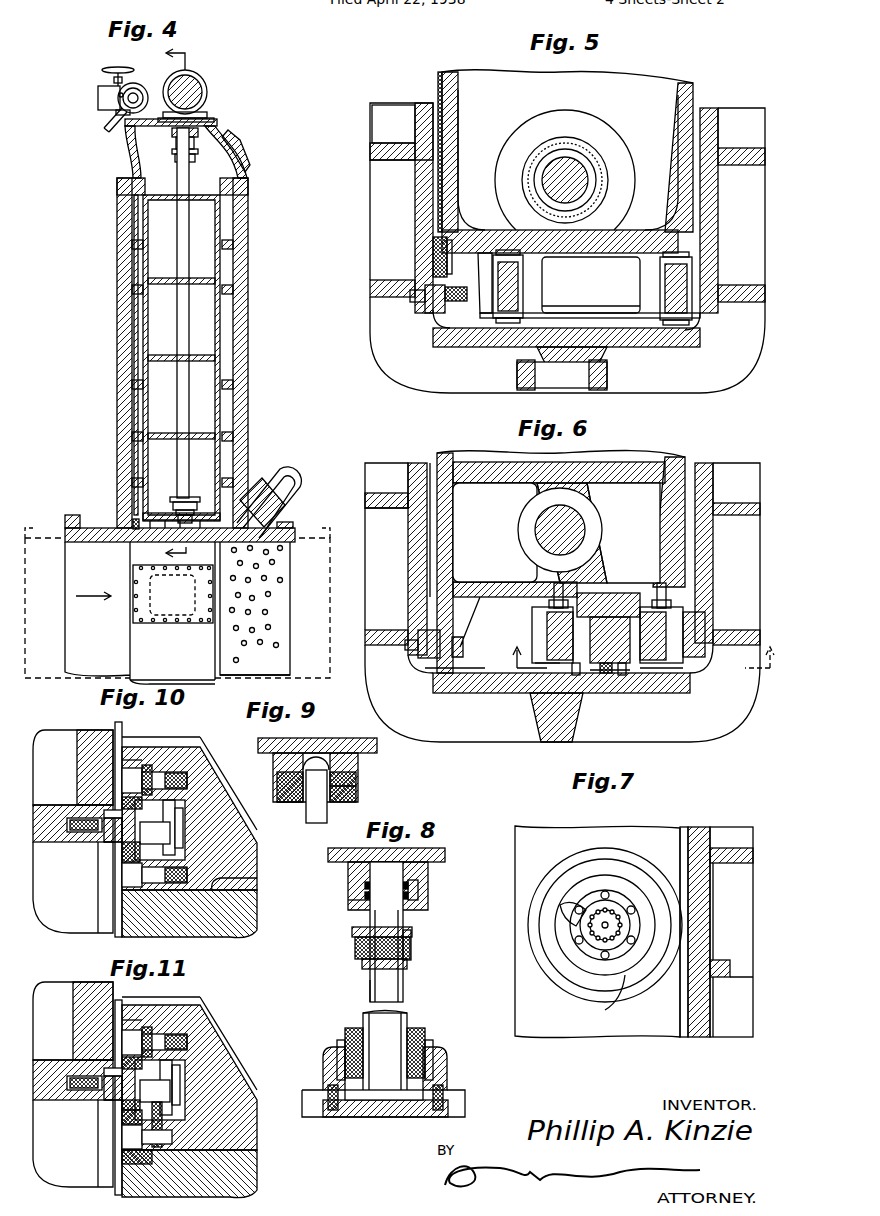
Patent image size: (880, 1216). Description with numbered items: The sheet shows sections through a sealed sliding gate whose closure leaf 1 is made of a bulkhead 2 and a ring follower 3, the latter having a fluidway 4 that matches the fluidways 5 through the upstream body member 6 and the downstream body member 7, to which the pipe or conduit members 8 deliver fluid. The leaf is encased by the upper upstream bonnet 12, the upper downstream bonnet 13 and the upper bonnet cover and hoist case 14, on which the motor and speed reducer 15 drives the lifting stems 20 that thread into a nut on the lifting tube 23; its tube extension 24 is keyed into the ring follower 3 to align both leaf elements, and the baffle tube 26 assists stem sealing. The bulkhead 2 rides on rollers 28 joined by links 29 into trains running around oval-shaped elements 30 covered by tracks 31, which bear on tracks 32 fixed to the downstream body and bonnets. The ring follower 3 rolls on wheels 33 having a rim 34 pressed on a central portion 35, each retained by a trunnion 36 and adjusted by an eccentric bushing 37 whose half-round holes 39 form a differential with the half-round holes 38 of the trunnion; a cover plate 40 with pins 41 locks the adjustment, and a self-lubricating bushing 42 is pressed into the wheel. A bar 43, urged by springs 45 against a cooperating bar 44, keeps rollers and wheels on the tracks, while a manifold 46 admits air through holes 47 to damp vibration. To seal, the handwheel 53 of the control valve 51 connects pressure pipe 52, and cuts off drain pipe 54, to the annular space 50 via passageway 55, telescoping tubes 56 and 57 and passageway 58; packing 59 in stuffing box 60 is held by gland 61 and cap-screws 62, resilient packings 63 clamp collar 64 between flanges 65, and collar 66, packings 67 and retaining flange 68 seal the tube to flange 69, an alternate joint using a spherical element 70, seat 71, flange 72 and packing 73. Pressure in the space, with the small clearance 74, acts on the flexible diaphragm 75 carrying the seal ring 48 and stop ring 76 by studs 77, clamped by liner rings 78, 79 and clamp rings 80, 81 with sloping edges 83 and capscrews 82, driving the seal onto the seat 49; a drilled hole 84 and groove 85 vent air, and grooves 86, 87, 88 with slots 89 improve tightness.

In FIG. 4, the leaf 1 is at (200, 542).
In FIG. 10, the leaf 1 is at (195, 763).
In FIG. 11, the leaf 1 is at (180, 1014).
In FIG. 4, the bulkhead 2 is at (215, 320).
In FIG. 5, the bulkhead 2 is at (466, 70).
In FIG. 8, the bulkhead 2 is at (466, 1101).
In FIG. 10, the bulkhead 2 is at (231, 938).
In FIG. 11, the bulkhead 2 is at (206, 1064).
In FIG. 4, the ring follower 3 is at (214, 681).
In FIG. 6, the ring follower 3 is at (480, 460).
In FIG. 7, the ring follower 3 is at (543, 832).
In FIG. 4, the fluidway 4 is at (195, 657).
In FIG. 4, the fluidways 5 is at (240, 668).
In FIG. 4, the upstream body member 6 is at (95, 528).
In FIG. 6, the upstream body member 6 is at (405, 464).
In FIG. 10, the upstream body member 6 is at (78, 746).
In FIG. 11, the upstream body member 6 is at (78, 992).
In FIG. 4, the downstream body member 7 is at (278, 678).
In FIG. 6, the downstream body member 7 is at (730, 465).
In FIG. 7, the downstream body member 7 is at (748, 907).
In FIG. 4, the pipe or conduit members 8 is at (18, 533).
In FIG. 4, the upper upstream bonnet 12 is at (117, 320).
In FIG. 5, the upper upstream bonnet 12 is at (370, 288).
In FIG. 4, the upper downstream bonnet 13 is at (240, 306).
In FIG. 5, the upper downstream bonnet 13 is at (738, 266).
In FIG. 4, the upper bonnet cover and hoist case 14 is at (133, 173).
In FIG. 9, the upper bonnet cover and hoist case 14 is at (378, 751).
In FIG. 8, the upper bonnet cover and hoist case 14 is at (445, 855).
In FIG. 4, the motor and speed reducer 15 is at (205, 92).
In FIG. 5, the lifting stems 20 is at (583, 165).
In FIG. 5, the lifting tube 23 is at (565, 142).
In FIG. 6, the tube extension 24 is at (590, 527).
In FIG. 5, the baffle tube 26 is at (535, 168).
In FIG. 5, the rollers 28 is at (700, 320).
In FIG. 5, the links 29 is at (496, 323).
In FIG. 5, the oval-shaped elements 30 is at (622, 278).
In FIG. 5, the non-corrodible tracks 31 is at (632, 300).
In FIG. 5, the non-corrodible tracks 32 is at (700, 347).
In FIG. 6, the non-corrodible tracks 32 is at (705, 632).
In FIG. 7, the non-corrodible tracks 32 is at (690, 826).
In FIG. 6, the wheels 33 is at (662, 670).
In FIG. 7, the wheels 33 is at (585, 985).
In FIG. 6, the non-corrodible rim 34 is at (532, 618).
In FIG. 6, the central portion 35 is at (552, 670).
In FIG. 6, the trunnion 36 is at (607, 600).
In FIG. 7, the trunnion 36 is at (592, 940).
In FIG. 6, the eccentric bushing 37 is at (622, 676).
In FIG. 7, the eccentric bushing 37 is at (622, 1010).
In FIG. 7, the half-round holes 38 is at (615, 908).
In FIG. 7, the half-round holes 39 is at (561, 907).
In FIG. 6, the cover plate 40 is at (576, 676).
In FIG. 6, the pins 41 is at (604, 676).
In FIG. 6, the self-lubricating bushing 42 is at (680, 610).
In FIG. 5, the bar 43 is at (455, 301).
In FIG. 6, the bar 43 is at (433, 675).
In FIG. 5, the cooperating bar 44 is at (430, 313).
In FIG. 6, the cooperating bar 44 is at (420, 640).
In FIG. 5, the springs 45 is at (455, 302).
In FIG. 4, the manifold 46 is at (298, 470).
In FIG. 4, the holes 47 is at (265, 625).
In FIG. 5, the seal ring 48 is at (433, 257).
In FIG. 10, the seal ring 48 is at (120, 798).
In FIG. 4, the seat 49 is at (132, 545).
In FIG. 10, the seat 49 is at (106, 868).
In FIG. 11, the seat 49 is at (104, 1112).
In FIG. 5, the annular space 50 is at (466, 253).
In FIG. 10, the annular space 50 is at (178, 812).
In FIG. 11, the annular space 50 is at (173, 1082).
In FIG. 4, the control valve 51 is at (98, 92).
In FIG. 4, the pressure pipe 52 is at (104, 129).
In FIG. 4, the handwheel 53 is at (109, 70).
In FIG. 4, the drain pipe 54 is at (112, 114).
In FIG. 4, the passageway 55 is at (150, 140).
In FIG. 9, the passageway 55 is at (318, 760).
In FIG. 8, the passageway 55 is at (372, 880).
In FIG. 9, the telescoping tube 56 is at (318, 823).
In FIG. 8, the telescoping tube 56 is at (405, 919).
In FIG. 4, the telescoping tube 57 is at (176, 230).
In FIG. 8, the telescoping tube 57 is at (370, 992).
In FIG. 4, the passageway 58 is at (172, 506).
In FIG. 8, the passageway 58 is at (380, 1117).
In FIG. 8, the packing 59 is at (362, 964).
In FIG. 4, the stuffing box 60 is at (245, 166).
In FIG. 8, the stuffing box 60 is at (355, 951).
In FIG. 8, the gland 61 is at (352, 936).
In FIG. 8, the cap-screws 62 is at (412, 935).
In FIG. 8, the resilient packings 63 is at (352, 1062).
In FIG. 8, the collar 64 is at (433, 1062).
In FIG. 8, the flanges 65 is at (440, 1082).
In FIG. 8, the collar 66 is at (410, 886).
In FIG. 8, the resilient packings 67 is at (366, 886).
In FIG. 8, the retaining flange 68 is at (360, 900).
In FIG. 8, the flange 69 is at (412, 897).
In FIG. 9, the spherical element 70 is at (290, 801).
In FIG. 9, the seat 71 is at (350, 778).
In FIG. 9, the flange 72 is at (352, 798).
In FIG. 9, the packing 73 is at (282, 784).
In FIG. 10, the clearance 74 is at (116, 727).
In FIG. 10, the flexible diaphragm 75 is at (145, 768).
In FIG. 11, the flexible diaphragm 75 is at (145, 1030).
In FIG. 10, the stop ring 76 is at (177, 856).
In FIG. 11, the stop ring 76 is at (182, 1066).
In FIG. 10, the studs 77 is at (170, 834).
In FIG. 11, the studs 77 is at (172, 1093).
In FIG. 10, the liner ring 78 is at (172, 765).
In FIG. 11, the liner ring 78 is at (190, 1022).
In FIG. 10, the liner ring 79 is at (214, 879).
In FIG. 10, the clamp ring 80 is at (126, 760).
In FIG. 11, the clamp ring 80 is at (123, 1020).
In FIG. 10, the clamp ring 81 is at (121, 890).
In FIG. 11, the clamp ring 81 is at (121, 1142).
In FIG. 10, the capscrews 82 is at (120, 938).
In FIG. 11, the capscrews 82 is at (195, 1037).
In FIG. 11, the sloping edges 83 is at (120, 1118).
In FIG. 11, the drilled hole 84 is at (135, 1162).
In FIG. 11, the groove 85 is at (165, 1122).
In FIG. 10, the annular groove 86 is at (106, 850).
In FIG. 11, the annular groove 86 is at (104, 1104).
In FIG. 10, the annular groove 87 is at (96, 842).
In FIG. 11, the annular groove 87 is at (96, 1100).
In FIG. 10, the annular groove 88 is at (118, 822).
In FIG. 11, the annular groove 88 is at (118, 1078).
In FIG. 10, the slots 89 is at (118, 808).
In FIG. 11, the slots 89 is at (120, 1068).